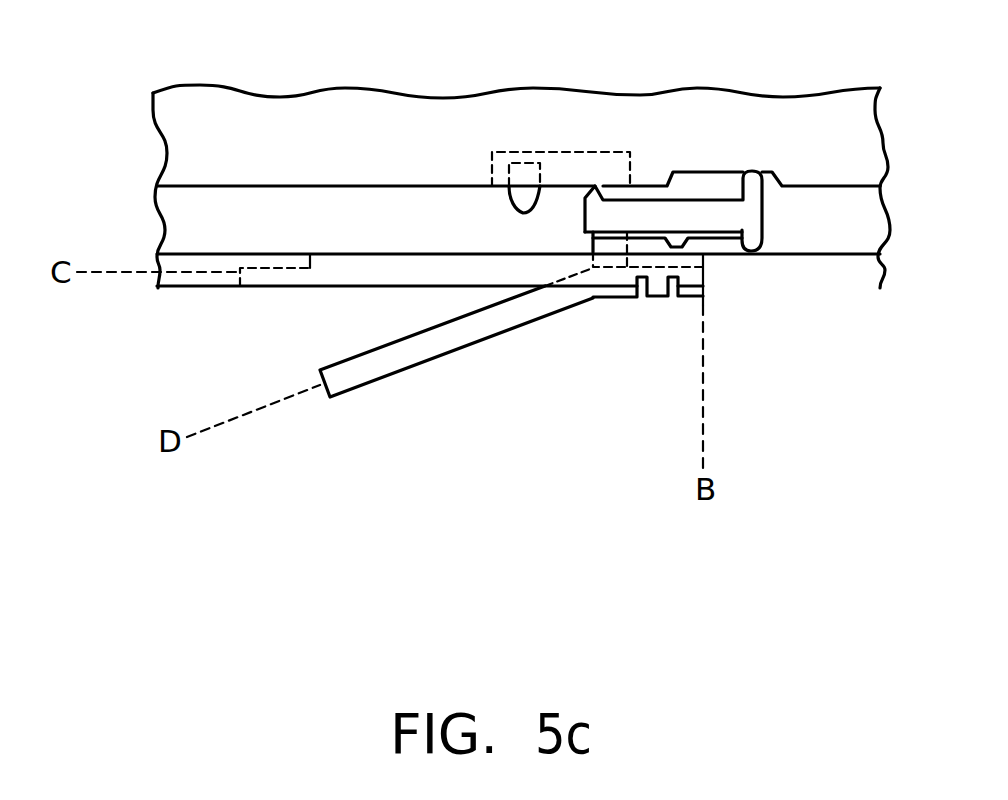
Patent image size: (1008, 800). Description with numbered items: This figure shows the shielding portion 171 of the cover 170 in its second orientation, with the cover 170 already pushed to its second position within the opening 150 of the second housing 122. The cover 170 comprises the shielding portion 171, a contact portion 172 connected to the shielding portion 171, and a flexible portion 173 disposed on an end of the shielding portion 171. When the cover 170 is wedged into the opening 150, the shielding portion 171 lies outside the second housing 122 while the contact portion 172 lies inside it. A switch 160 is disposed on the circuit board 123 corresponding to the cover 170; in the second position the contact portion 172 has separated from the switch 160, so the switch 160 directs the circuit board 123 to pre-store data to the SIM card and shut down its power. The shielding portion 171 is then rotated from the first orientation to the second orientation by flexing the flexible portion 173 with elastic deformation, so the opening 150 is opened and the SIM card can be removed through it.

The circuit board 123 is at (357, 103).
The second housing 122 is at (198, 279).
The opening 150 is at (280, 279).
The switch 160 is at (585, 152).
The cover 170 is at (541, 324).
The shielding portion 171 is at (493, 326).
The contact portion 172 is at (615, 220).
The flexible portion 173 is at (648, 327).